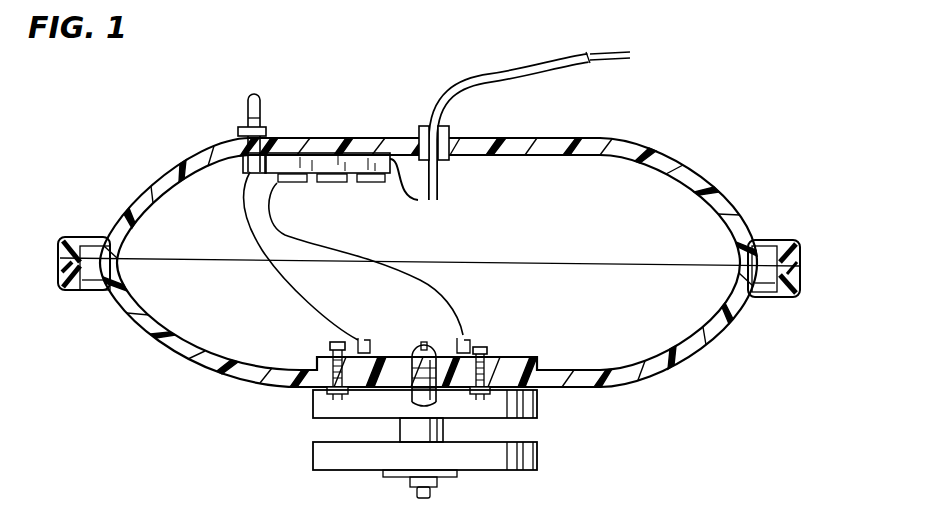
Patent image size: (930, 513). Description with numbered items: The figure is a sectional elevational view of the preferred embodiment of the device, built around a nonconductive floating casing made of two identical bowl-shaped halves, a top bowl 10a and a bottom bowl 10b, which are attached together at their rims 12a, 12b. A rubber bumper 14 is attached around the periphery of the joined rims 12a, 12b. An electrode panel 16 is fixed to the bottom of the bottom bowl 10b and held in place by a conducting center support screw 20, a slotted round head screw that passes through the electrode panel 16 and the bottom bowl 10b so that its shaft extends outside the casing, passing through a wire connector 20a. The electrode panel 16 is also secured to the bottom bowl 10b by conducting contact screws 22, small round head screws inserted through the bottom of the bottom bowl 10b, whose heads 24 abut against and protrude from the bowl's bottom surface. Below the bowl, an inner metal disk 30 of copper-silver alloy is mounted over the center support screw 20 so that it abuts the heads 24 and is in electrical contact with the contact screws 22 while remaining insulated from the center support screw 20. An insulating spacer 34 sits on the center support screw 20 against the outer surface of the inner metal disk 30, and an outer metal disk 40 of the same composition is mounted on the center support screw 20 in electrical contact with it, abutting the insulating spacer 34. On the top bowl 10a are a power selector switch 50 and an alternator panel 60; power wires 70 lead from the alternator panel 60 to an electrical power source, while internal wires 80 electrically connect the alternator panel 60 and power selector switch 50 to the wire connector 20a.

The top bowl 10a is at (722, 190).
The bottom bowl 10b is at (730, 318).
The rim 12a is at (93, 243).
The rim 12b is at (93, 291).
The rubber bumper 14 is at (785, 241).
The electrode panel 16 is at (387, 357).
The center support screw 20 is at (443, 355).
The wire connector 20a is at (470, 338).
The contact screws 22 is at (330, 343).
The heads 24 is at (330, 392).
The inner metal disk 30 is at (313, 415).
The insulating spacer 34 is at (445, 430).
The outer metal disk 40 is at (478, 463).
The power selector switch 50 is at (248, 120).
The alternator panel 60 is at (277, 160).
The power wires 70 is at (478, 80).
The internal wires 80 is at (288, 232).